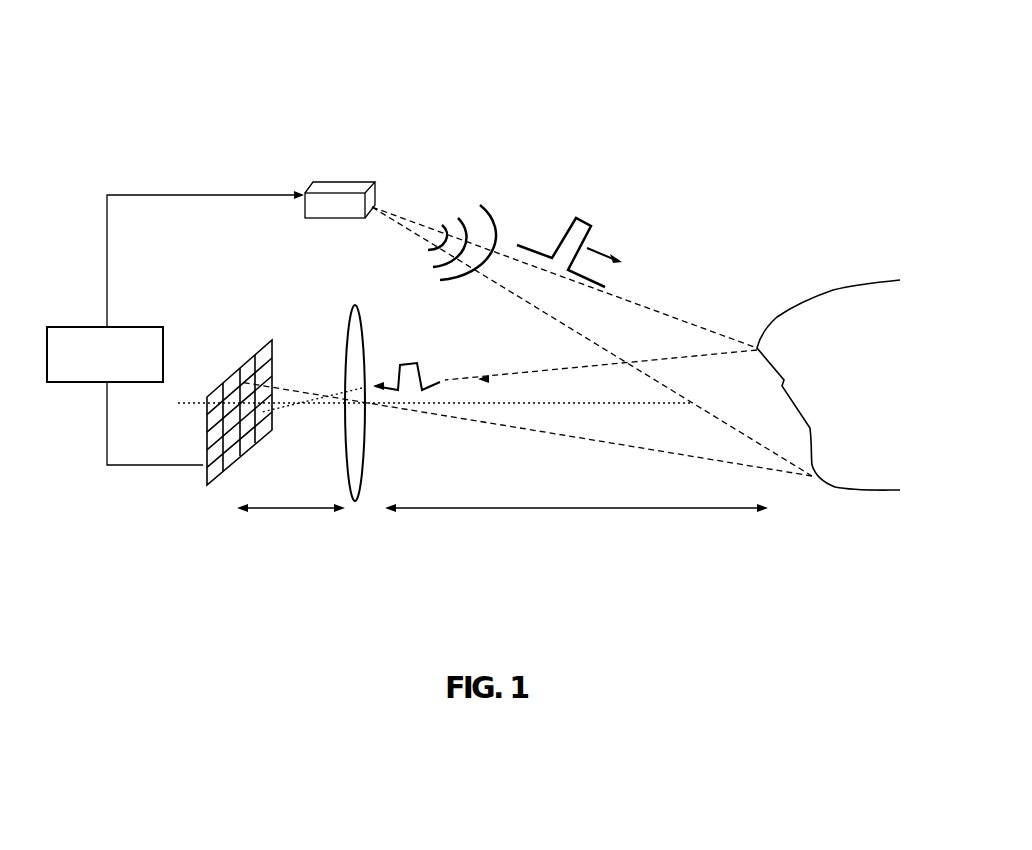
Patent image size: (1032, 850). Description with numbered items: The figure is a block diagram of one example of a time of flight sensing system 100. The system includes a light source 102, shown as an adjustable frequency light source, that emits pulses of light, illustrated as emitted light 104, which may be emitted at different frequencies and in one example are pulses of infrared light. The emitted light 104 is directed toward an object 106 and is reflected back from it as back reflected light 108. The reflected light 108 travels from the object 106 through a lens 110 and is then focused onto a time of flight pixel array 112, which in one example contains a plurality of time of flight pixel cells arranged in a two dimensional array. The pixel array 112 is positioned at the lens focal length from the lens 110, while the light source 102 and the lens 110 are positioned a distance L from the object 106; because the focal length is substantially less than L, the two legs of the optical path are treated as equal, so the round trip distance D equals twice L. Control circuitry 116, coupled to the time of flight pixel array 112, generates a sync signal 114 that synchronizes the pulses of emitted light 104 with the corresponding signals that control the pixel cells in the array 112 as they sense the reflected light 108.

The time of flight sensing system 100 is at (870, 37).
The light source 102 is at (380, 190).
The emitted light 104 is at (574, 216).
The object 106 is at (793, 302).
The back reflected light 108 is at (405, 362).
The lens 110 is at (348, 325).
The time of flight pixel array 112 is at (217, 380).
The sync signal 114 is at (131, 183).
The control circuitry 116 is at (80, 327).